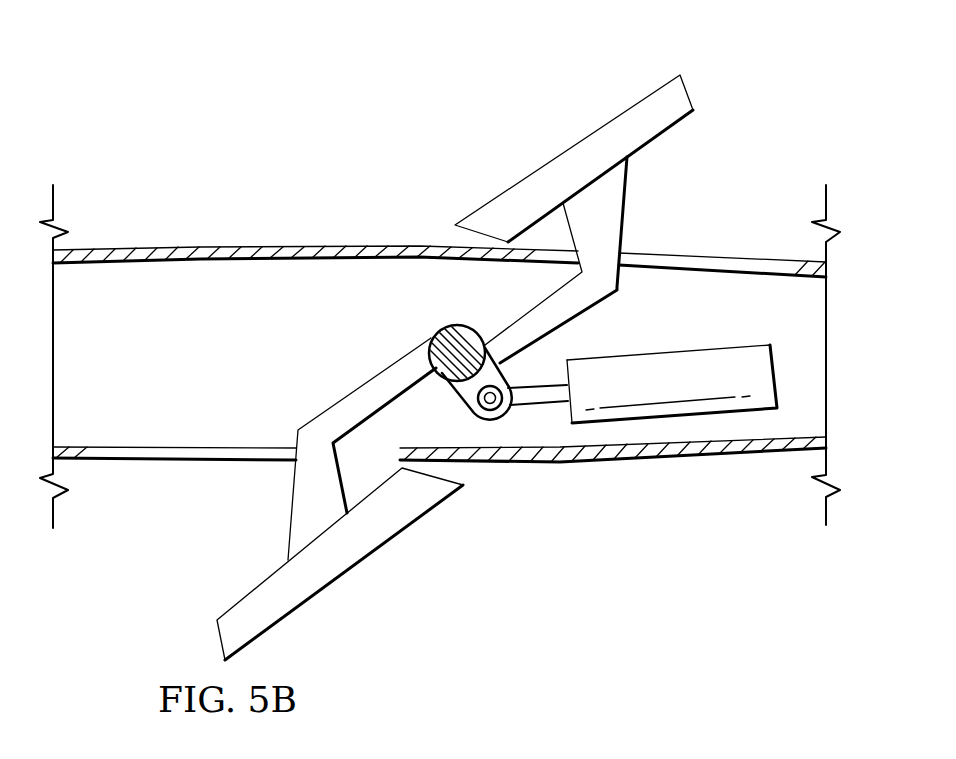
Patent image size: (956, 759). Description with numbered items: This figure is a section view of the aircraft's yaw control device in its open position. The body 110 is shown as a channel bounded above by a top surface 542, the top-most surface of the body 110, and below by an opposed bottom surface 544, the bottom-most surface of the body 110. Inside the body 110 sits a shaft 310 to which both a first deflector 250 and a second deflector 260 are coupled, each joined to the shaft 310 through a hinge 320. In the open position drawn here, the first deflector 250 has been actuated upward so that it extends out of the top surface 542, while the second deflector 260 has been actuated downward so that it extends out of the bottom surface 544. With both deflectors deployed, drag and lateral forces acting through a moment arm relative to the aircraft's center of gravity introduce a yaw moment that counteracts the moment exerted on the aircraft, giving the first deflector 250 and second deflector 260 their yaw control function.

The body 110 is at (440, 307).
The first deflector 250 is at (685, 93).
The second deflector 260 is at (340, 563).
The shaft 310 is at (448, 335).
The hinge 320 is at (265, 512).
The top surface 542 is at (360, 245).
The bottom surface 544 is at (603, 461).